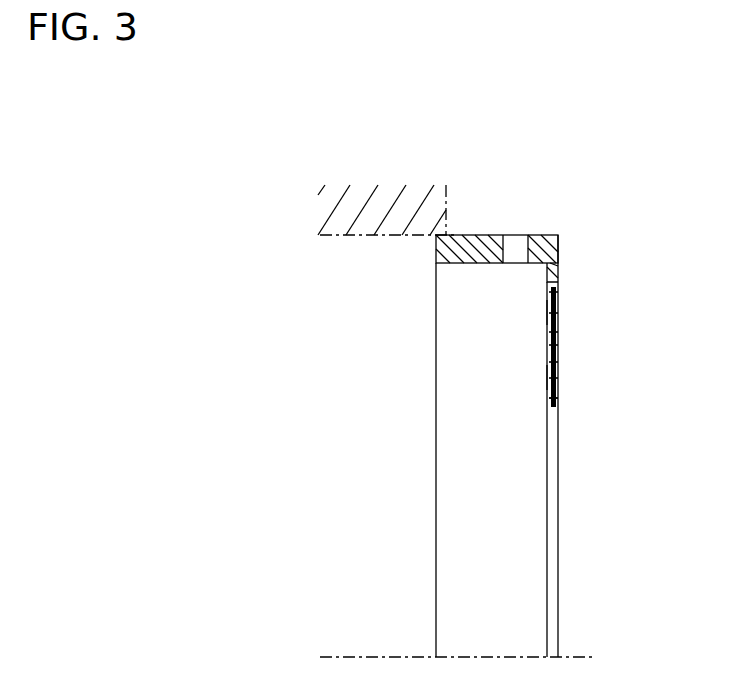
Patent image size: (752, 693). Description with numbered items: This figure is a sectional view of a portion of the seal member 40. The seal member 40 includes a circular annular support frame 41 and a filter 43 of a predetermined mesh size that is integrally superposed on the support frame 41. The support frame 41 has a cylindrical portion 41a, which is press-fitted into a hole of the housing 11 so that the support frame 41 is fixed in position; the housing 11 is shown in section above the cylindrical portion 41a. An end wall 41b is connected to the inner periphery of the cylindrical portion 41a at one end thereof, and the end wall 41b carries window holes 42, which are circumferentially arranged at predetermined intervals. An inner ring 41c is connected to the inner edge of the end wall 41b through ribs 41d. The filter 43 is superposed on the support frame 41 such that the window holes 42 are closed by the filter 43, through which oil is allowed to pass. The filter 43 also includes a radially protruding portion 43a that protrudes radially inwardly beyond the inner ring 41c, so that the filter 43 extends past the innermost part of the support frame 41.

The housing 11 is at (368, 187).
The seal member 40 is at (563, 543).
The support frame 41 is at (543, 232).
The cylindrical portion 41a is at (480, 233).
The end wall 41b is at (557, 268).
The inner ring 41c is at (547, 378).
The ribs 41d is at (547, 312).
The window holes 42 is at (556, 293).
The filter 43 is at (558, 345).
The radially protruding portion 43a is at (556, 398).